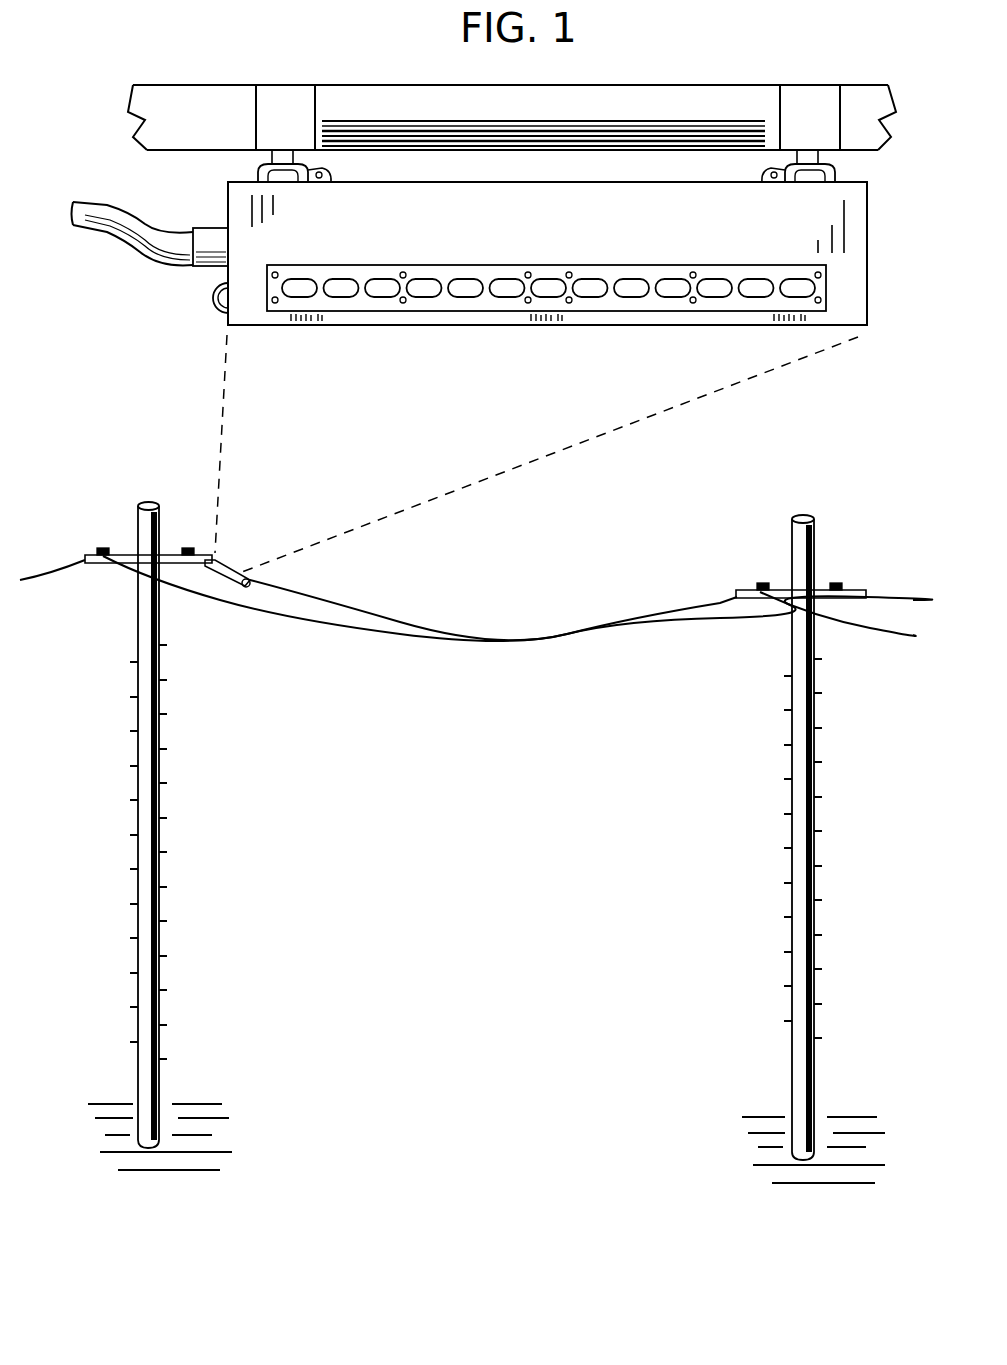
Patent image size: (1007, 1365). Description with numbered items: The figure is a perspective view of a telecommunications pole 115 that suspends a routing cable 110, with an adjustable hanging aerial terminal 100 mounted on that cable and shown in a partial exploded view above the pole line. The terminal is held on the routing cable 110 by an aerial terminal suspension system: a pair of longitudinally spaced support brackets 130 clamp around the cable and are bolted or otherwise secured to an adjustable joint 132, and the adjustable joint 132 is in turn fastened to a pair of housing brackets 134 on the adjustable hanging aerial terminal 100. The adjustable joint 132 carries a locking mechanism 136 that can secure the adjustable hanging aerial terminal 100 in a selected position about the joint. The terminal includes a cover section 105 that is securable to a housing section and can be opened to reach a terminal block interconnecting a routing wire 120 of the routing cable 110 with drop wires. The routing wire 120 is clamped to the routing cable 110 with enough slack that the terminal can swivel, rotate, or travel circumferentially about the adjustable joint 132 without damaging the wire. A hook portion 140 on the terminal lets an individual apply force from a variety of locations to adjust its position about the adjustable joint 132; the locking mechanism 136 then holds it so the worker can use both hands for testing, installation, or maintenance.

The adjustable hanging aerial terminal 100 is at (386, 340).
The cover section 105 is at (638, 318).
The routing cable 110 is at (165, 85).
The telecommunications pole 115 is at (162, 1072).
The routing wire 120 is at (100, 240).
The support brackets 130 is at (278, 85).
The adjustable joint 132 is at (240, 152).
The housing brackets 134 is at (262, 166).
The locking mechanism 136 is at (325, 171).
The hook portion 140 is at (213, 300).